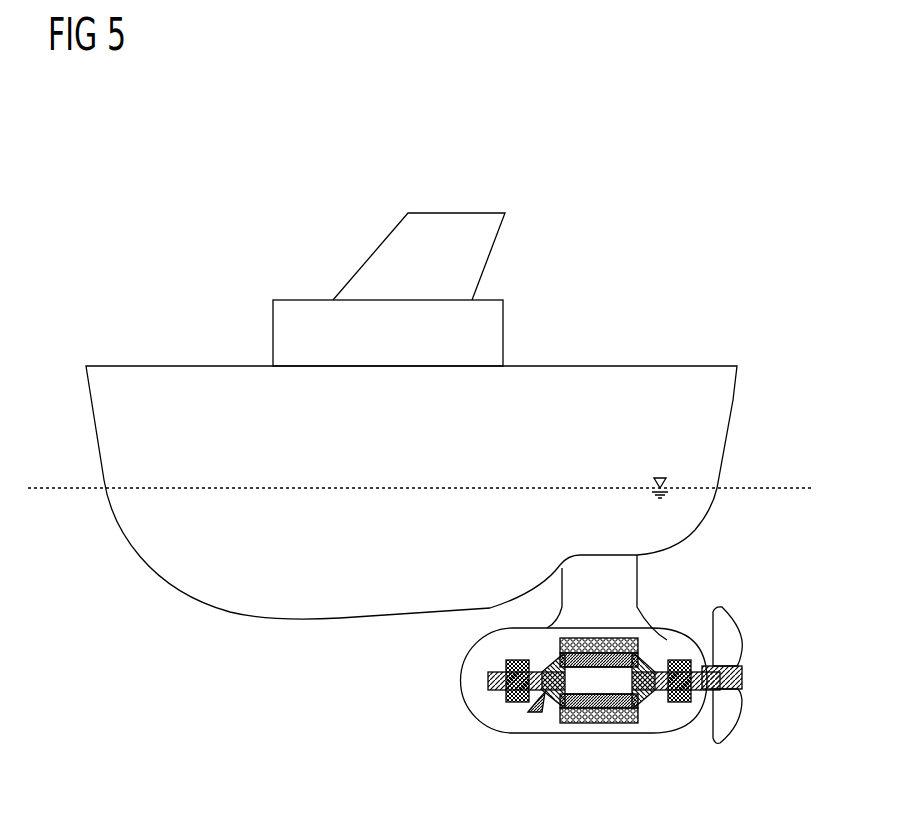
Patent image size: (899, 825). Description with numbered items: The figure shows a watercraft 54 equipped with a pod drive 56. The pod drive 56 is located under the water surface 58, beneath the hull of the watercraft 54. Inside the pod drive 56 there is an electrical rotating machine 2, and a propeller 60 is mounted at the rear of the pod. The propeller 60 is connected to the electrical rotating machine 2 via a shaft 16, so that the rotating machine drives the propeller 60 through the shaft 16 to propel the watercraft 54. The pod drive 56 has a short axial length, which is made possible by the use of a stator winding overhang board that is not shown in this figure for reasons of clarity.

The watercraft 54 is at (715, 410).
The water surface 58 is at (808, 486).
The pod drive 56 is at (484, 710).
The electrical rotating machine 2 is at (540, 700).
The shaft 16 is at (656, 712).
The propeller 60 is at (730, 633).